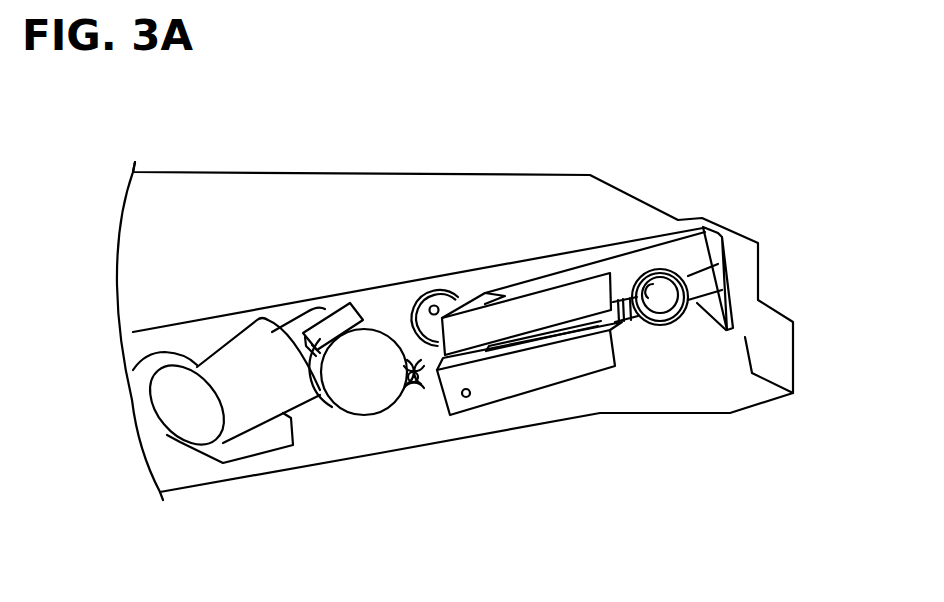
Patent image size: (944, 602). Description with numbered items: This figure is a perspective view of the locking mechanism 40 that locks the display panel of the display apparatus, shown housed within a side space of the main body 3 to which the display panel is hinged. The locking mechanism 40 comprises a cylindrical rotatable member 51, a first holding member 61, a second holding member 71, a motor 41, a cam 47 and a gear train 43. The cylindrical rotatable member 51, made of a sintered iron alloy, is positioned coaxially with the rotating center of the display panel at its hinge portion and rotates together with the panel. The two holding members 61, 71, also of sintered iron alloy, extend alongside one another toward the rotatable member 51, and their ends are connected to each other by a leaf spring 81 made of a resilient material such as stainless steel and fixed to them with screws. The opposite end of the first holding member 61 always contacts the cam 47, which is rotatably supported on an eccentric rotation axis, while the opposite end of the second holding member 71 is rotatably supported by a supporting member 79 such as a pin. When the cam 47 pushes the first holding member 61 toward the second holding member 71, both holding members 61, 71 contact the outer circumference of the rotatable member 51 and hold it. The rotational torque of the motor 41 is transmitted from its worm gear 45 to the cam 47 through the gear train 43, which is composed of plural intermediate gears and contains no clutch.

The main body 3 is at (610, 197).
The locking mechanism 40 is at (212, 279).
The motor 41 is at (133, 370).
The gear train 43 is at (465, 257).
The worm gear 45 is at (327, 330).
The cam 47 is at (462, 299).
The cylindrical rotatable member 51 is at (668, 274).
The first holding member 61 is at (577, 297).
The second holding member 71 is at (548, 377).
The supporting member 79 is at (462, 400).
The leaf spring 81 is at (725, 286).